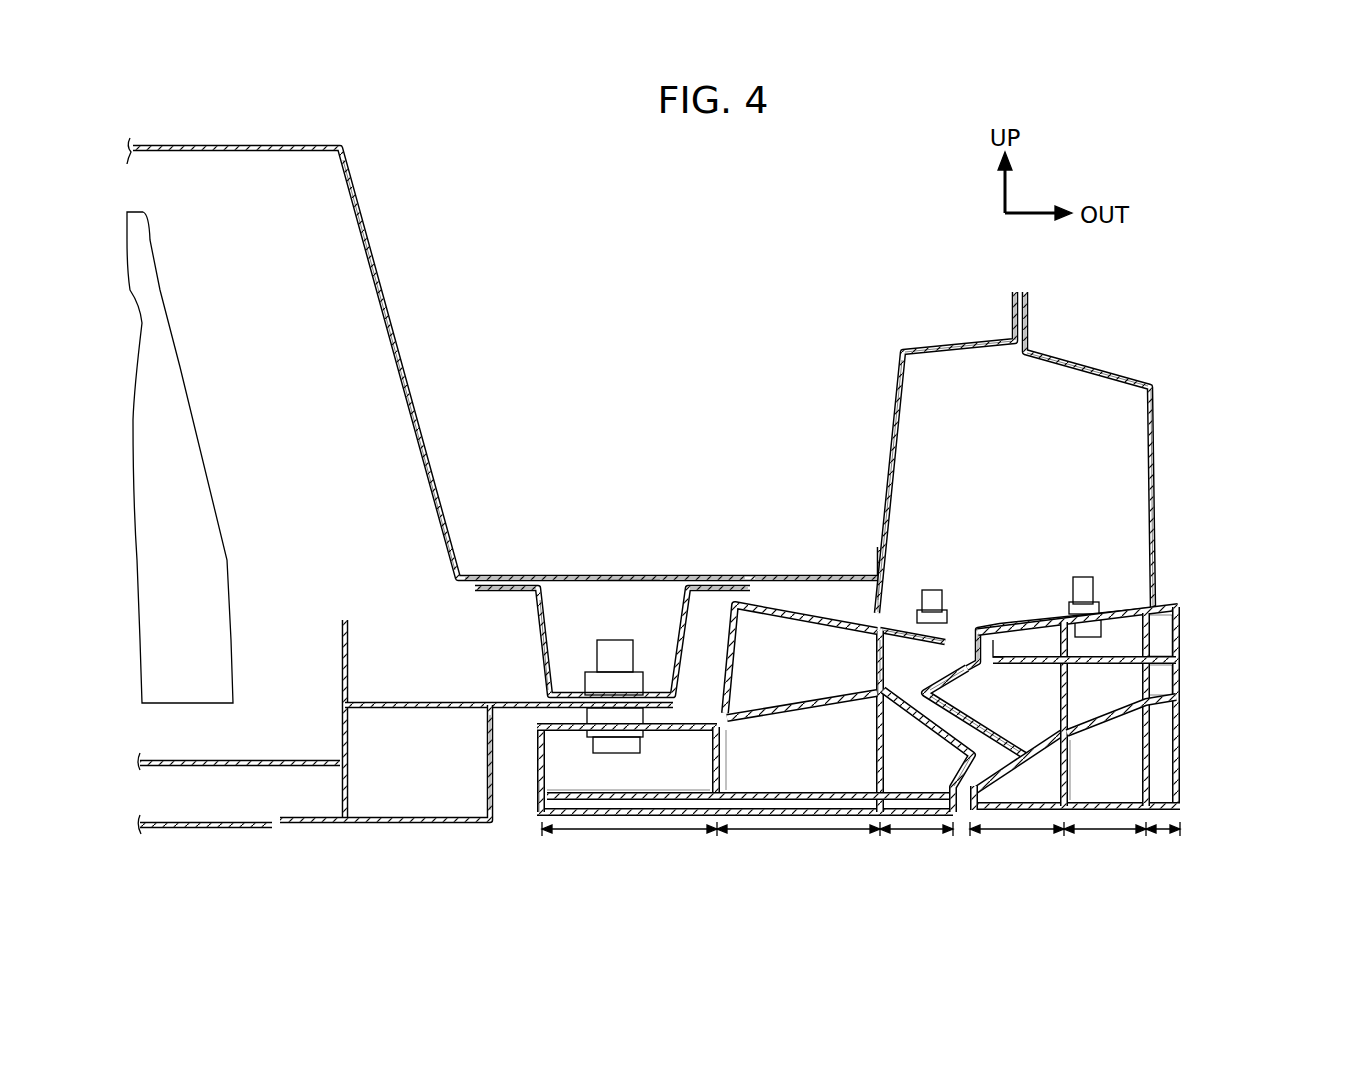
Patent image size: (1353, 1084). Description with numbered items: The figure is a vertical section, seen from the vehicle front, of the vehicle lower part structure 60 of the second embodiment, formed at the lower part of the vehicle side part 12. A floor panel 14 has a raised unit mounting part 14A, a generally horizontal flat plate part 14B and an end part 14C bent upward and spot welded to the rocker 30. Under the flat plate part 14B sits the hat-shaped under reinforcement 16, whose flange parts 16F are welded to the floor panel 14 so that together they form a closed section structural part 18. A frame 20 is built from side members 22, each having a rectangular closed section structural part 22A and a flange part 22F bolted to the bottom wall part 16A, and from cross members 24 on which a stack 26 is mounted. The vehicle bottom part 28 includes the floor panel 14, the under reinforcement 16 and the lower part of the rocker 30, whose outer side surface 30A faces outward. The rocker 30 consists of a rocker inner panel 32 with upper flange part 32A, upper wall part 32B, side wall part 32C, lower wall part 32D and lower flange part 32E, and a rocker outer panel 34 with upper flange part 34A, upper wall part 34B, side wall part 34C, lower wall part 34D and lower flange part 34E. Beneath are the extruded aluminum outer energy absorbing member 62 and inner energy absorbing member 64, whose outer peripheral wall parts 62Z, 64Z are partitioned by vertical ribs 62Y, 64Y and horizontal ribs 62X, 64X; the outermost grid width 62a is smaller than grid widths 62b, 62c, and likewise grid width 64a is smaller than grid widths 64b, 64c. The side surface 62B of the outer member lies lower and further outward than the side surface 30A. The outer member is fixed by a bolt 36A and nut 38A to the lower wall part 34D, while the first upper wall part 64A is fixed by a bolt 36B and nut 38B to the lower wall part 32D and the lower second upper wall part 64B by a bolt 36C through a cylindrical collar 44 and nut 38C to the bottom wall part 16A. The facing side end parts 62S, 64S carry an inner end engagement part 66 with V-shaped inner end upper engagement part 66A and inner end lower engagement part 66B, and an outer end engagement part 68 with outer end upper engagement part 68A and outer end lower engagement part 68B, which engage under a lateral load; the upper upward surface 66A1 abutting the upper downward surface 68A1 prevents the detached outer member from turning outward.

The vehicle side part 12 is at (1180, 288).
The floor panel 14 is at (500, 503).
The unit mounting part 14A is at (400, 330).
The flat plate part 14B is at (610, 576).
The end part 14C is at (878, 549).
The under reinforcement 16 is at (538, 656).
The bottom wall part 16A is at (600, 665).
The flange parts 16F is at (510, 598).
The closed section structural part 18 is at (628, 567).
The frame 20 is at (378, 635).
The side member 22 is at (408, 692).
The closed section structural part 22A is at (360, 822).
The flange part 22F is at (556, 720).
The cross member 24 is at (252, 760).
The stack 26 is at (226, 458).
The vehicle bottom part 28 is at (1236, 552).
The rocker 30 is at (868, 341).
The side surface 30A is at (1158, 470).
The rocker inner panel 32 is at (880, 383).
The upper flange part 32A is at (1012, 295).
The upper wall part 32B is at (946, 343).
The side wall part 32C is at (893, 432).
The lower wall part 32D is at (905, 585).
The lower flange part 32E is at (958, 640).
The rocker outer panel 34 is at (1208, 393).
The upper flange part 34A is at (1028, 298).
The upper wall part 34B is at (1096, 370).
The side wall part 34C is at (1158, 428).
The lower wall part 34D is at (1122, 620).
The lower flange part 34E is at (982, 640).
The bolt 36A is at (1082, 605).
The bolt 36B is at (932, 600).
The bolt 36C is at (640, 665).
The nut 38A is at (1060, 620).
The nut 38B is at (921, 620).
The nut 38C is at (602, 690).
The cylindrical collar 44 is at (646, 713).
The vehicle lower part structure 60 is at (1217, 856).
The outer energy absorbing member 62 is at (1200, 776).
The grid width 62a is at (1165, 833).
The grid width 62b is at (1103, 833).
The grid width 62c is at (1022, 833).
The side surface 62B is at (1182, 628).
The side end part 62S is at (1027, 648).
The horizontal ribs 62X is at (1133, 712).
The vertical ribs 62Y is at (1182, 742).
The outer peripheral wall part 62Z is at (1182, 685).
The inner energy absorbing member 64 is at (560, 845).
The grid width 64a is at (925, 833).
The grid width 64b is at (800, 833).
The grid width 64c is at (625, 833).
The first upper wall part 64A is at (760, 612).
The second upper wall part 64B is at (598, 742).
The side end part 64S is at (882, 660).
The horizontal ribs 64X is at (742, 736).
The vertical ribs 64Y is at (873, 760).
The outer peripheral wall part 64Z is at (530, 792).
The inner end engagement part 66 is at (1038, 732).
The inner end upper engagement part 66A is at (960, 712).
The upper upward surface 66A1 is at (962, 668).
The inner end lower engagement part 66B is at (1018, 792).
The outer end engagement part 68 is at (942, 733).
The outer end upper engagement part 68A is at (880, 712).
The upper downward surface 68A1 is at (878, 688).
The outer end lower engagement part 68B is at (955, 760).